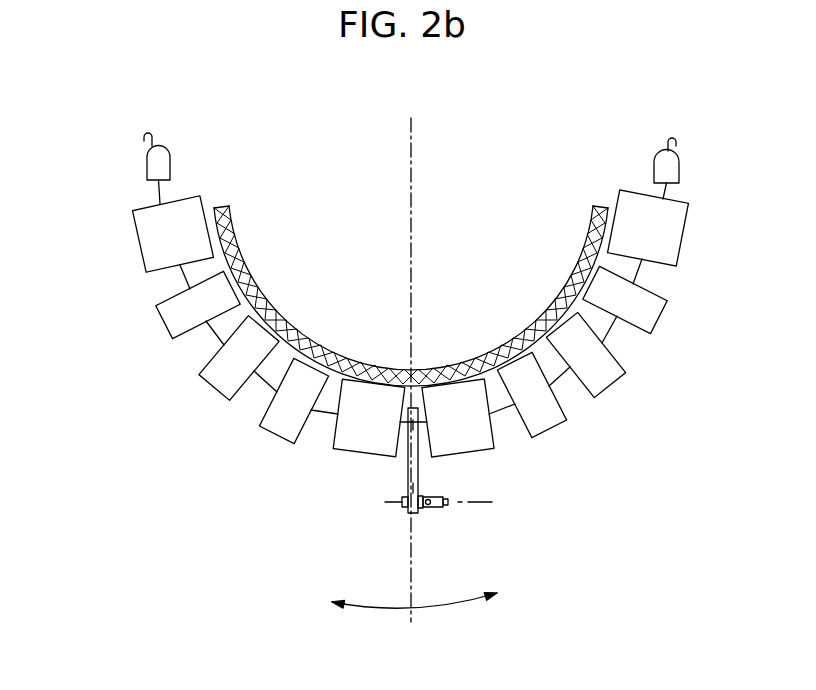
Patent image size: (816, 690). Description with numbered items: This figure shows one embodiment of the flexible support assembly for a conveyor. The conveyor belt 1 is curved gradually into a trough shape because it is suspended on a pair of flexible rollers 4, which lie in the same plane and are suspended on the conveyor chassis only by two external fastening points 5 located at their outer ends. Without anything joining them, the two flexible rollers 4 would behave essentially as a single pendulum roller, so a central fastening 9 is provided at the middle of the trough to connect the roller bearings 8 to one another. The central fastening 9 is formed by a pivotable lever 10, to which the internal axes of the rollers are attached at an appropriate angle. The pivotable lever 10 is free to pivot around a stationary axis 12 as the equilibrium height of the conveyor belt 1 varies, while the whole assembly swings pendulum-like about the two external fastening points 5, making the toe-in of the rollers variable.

The conveyor belt 1 is at (580, 255).
The flexible rollers 4 is at (640, 277).
The external fastening points 5 is at (147, 168).
The roller bearings 8 is at (353, 437).
The central fastening 9 is at (414, 624).
The pivotable lever 10 is at (400, 482).
The stationary axis 12 is at (460, 500).